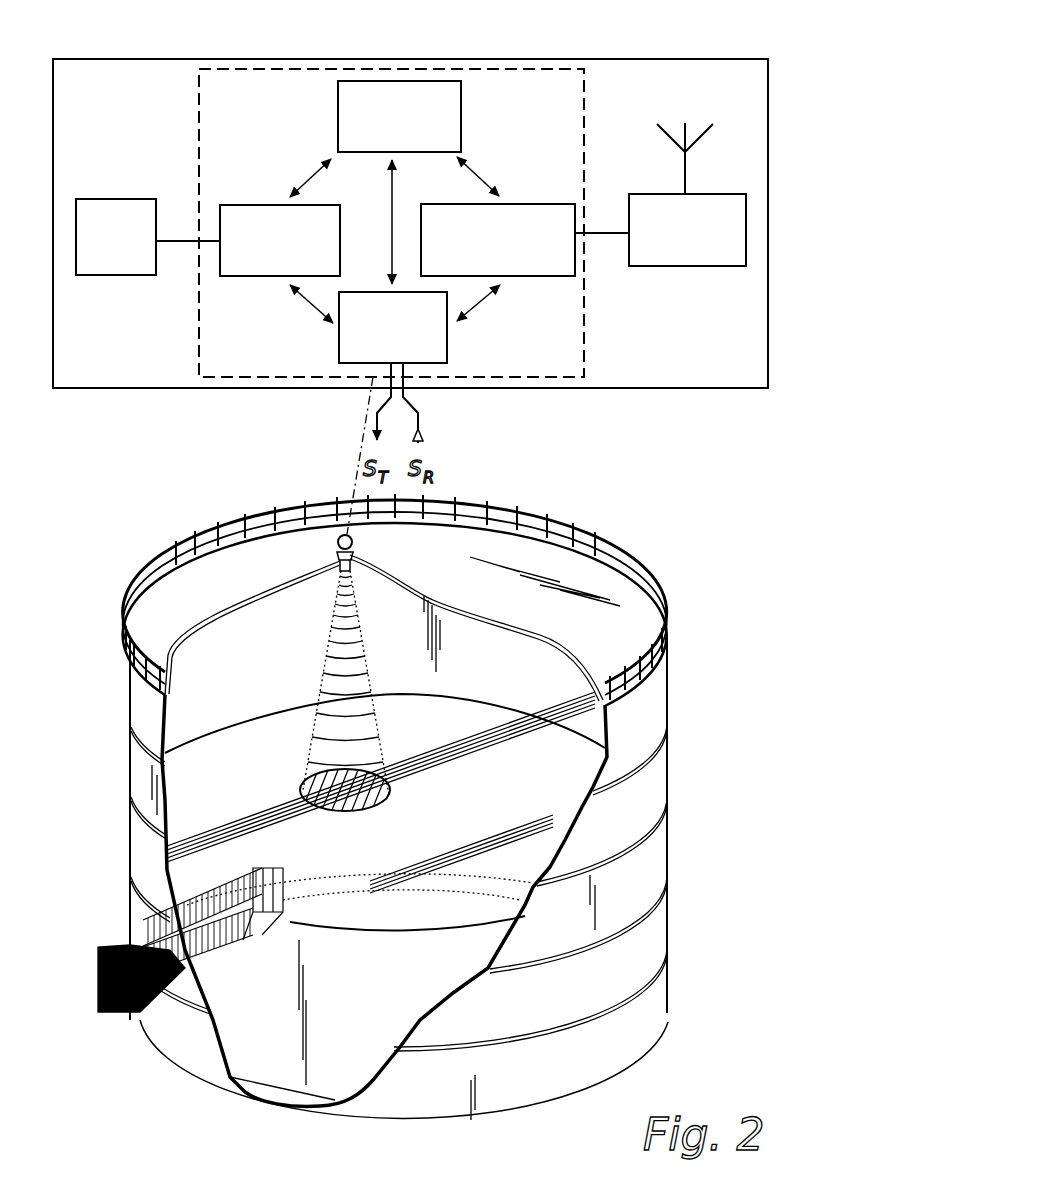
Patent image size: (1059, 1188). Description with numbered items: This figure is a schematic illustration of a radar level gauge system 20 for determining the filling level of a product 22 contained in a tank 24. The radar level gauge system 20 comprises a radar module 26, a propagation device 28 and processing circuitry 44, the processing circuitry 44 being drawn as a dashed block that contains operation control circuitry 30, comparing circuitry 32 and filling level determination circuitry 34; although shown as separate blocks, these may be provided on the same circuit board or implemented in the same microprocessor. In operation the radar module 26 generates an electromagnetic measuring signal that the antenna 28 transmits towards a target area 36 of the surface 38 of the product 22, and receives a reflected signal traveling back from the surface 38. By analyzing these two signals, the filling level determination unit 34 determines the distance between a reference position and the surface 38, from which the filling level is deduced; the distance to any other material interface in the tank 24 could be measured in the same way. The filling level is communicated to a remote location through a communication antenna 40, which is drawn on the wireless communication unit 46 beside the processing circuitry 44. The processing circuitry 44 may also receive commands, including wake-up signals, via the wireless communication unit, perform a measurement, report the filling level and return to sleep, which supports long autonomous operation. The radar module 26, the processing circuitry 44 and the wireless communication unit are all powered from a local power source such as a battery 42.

The radar level gauge system 20 is at (292, 512).
The product 22 is at (343, 1020).
The tank 24 is at (652, 773).
The radar module 26 is at (438, 345).
The propagation device 28 is at (333, 575).
The operation control circuitry 30 is at (450, 83).
The comparing circuitry 32 is at (252, 276).
The filling level determination circuitry 34 is at (560, 265).
The target area 36 is at (390, 793).
The surface 38 is at (467, 927).
The communication antenna 40 is at (683, 178).
The battery 42 is at (113, 197).
The processing circuitry 44 is at (585, 355).
The wireless HART communication unit 46 is at (746, 231).